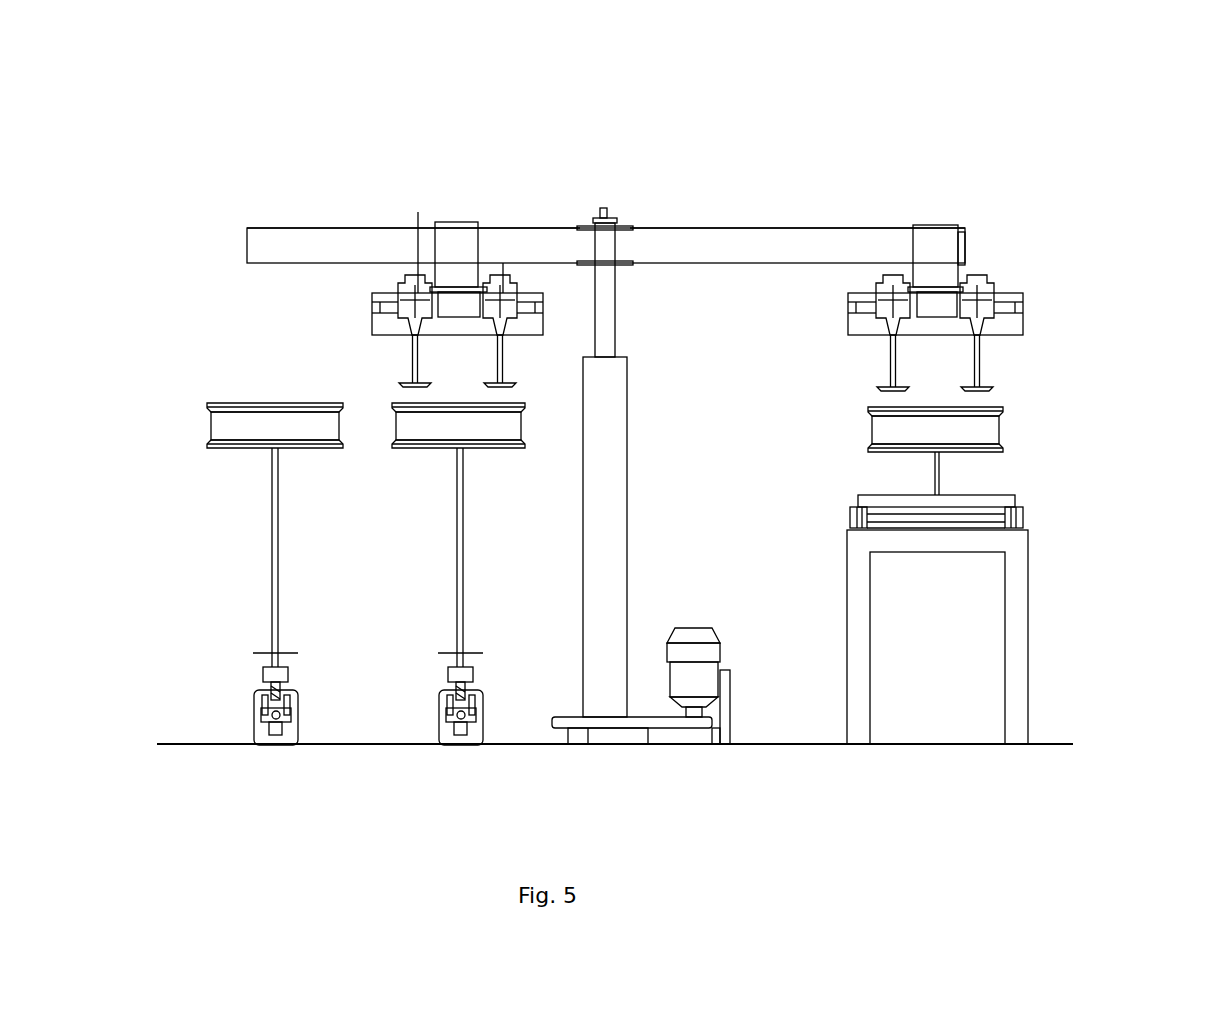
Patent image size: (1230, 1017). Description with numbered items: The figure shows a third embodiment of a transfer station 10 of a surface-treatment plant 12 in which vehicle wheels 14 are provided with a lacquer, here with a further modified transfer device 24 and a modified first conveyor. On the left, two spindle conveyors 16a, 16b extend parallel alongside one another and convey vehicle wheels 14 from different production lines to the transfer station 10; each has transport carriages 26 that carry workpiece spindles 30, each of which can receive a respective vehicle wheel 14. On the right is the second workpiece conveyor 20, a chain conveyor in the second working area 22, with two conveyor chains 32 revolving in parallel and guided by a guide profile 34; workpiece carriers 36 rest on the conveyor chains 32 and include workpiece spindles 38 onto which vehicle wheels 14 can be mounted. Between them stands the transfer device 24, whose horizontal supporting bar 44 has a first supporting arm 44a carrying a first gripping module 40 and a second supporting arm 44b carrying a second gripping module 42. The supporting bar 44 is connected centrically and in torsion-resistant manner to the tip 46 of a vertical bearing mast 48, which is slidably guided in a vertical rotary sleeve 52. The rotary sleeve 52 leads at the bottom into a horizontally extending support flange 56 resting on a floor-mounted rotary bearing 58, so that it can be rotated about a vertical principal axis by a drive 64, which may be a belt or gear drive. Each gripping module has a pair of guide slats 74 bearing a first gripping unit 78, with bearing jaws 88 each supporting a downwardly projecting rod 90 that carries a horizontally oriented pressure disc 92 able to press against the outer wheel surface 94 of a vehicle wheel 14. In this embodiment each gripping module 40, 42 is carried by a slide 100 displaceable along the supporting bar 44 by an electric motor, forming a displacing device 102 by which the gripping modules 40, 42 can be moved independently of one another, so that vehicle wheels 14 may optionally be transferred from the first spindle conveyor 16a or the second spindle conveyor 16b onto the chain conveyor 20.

The transfer station 10 is at (1049, 100).
The surface-treatment plant 12 is at (82, 136).
The vehicle wheel 14 is at (231, 438).
The first spindle conveyor 16a is at (253, 722).
The second spindle conveyor 16b is at (455, 752).
The second workpiece conveyor 20 is at (1030, 524).
The second working area 22 is at (1078, 612).
The transfer device 24 is at (744, 148).
The transport carriage 26 is at (292, 678).
The workpiece spindle 30 is at (279, 558).
The conveyor chain 32 is at (851, 502).
The guide profile 34 is at (851, 521).
The workpiece carrier 36 is at (866, 494).
The workpiece spindle 38 is at (934, 470).
The first gripping module 40 is at (372, 327).
The second gripping module 42 is at (1027, 328).
The supporting bar 44 is at (380, 226).
The first supporting arm 44a is at (343, 228).
The second supporting arm 44b is at (842, 228).
The tip of the bearing mast 46 is at (652, 228).
The bearing mast 48 is at (606, 300).
The rotary sleeve 52 is at (628, 505).
The support flange 56 is at (555, 726).
The rotary bearing 58 is at (620, 732).
The drive 64 is at (700, 632).
The pair of guide slats 74 is at (390, 282).
The first gripping unit 78 is at (580, 228).
The bearing jaw 88 is at (411, 228).
The rod 90 is at (414, 364).
The pressure disc 92 is at (400, 385).
The outer wheel surface 94 is at (868, 425).
The slide 100 is at (460, 228).
The displacing device 102 is at (500, 225).